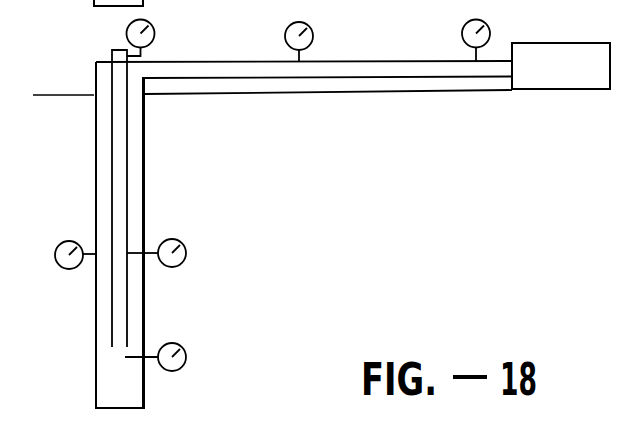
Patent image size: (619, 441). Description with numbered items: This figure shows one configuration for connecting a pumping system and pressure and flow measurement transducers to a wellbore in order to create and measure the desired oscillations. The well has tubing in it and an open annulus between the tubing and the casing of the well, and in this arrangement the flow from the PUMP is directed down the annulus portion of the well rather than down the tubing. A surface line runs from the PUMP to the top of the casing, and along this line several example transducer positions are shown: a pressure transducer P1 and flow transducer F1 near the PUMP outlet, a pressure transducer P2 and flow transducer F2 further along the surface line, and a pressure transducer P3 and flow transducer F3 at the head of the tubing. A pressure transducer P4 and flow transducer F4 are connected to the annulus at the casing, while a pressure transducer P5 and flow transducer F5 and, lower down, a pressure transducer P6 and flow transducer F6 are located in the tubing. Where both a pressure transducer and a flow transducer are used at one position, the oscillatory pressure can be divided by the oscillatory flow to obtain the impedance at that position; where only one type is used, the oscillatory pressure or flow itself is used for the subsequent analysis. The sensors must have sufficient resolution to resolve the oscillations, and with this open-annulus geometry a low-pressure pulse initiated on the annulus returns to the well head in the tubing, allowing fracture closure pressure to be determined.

The pressure transducer P1 is at (504, 34).
The flow transducer F1 is at (504, 34).
The pressure transducer P2 is at (332, 38).
The flow transducer F2 is at (332, 38).
The pressure transducer P3 is at (178, 35).
The flow transducer F3 is at (178, 35).
The pressure transducer P4 is at (58, 242).
The flow transducer F4 is at (58, 242).
The pressure transducer P5 is at (193, 252).
The flow transducer F5 is at (193, 252).
The pressure transducer P6 is at (191, 357).
The flow transducer F6 is at (191, 357).
The pump PUMP is at (561, 66).
The element casing is at (120, 235).